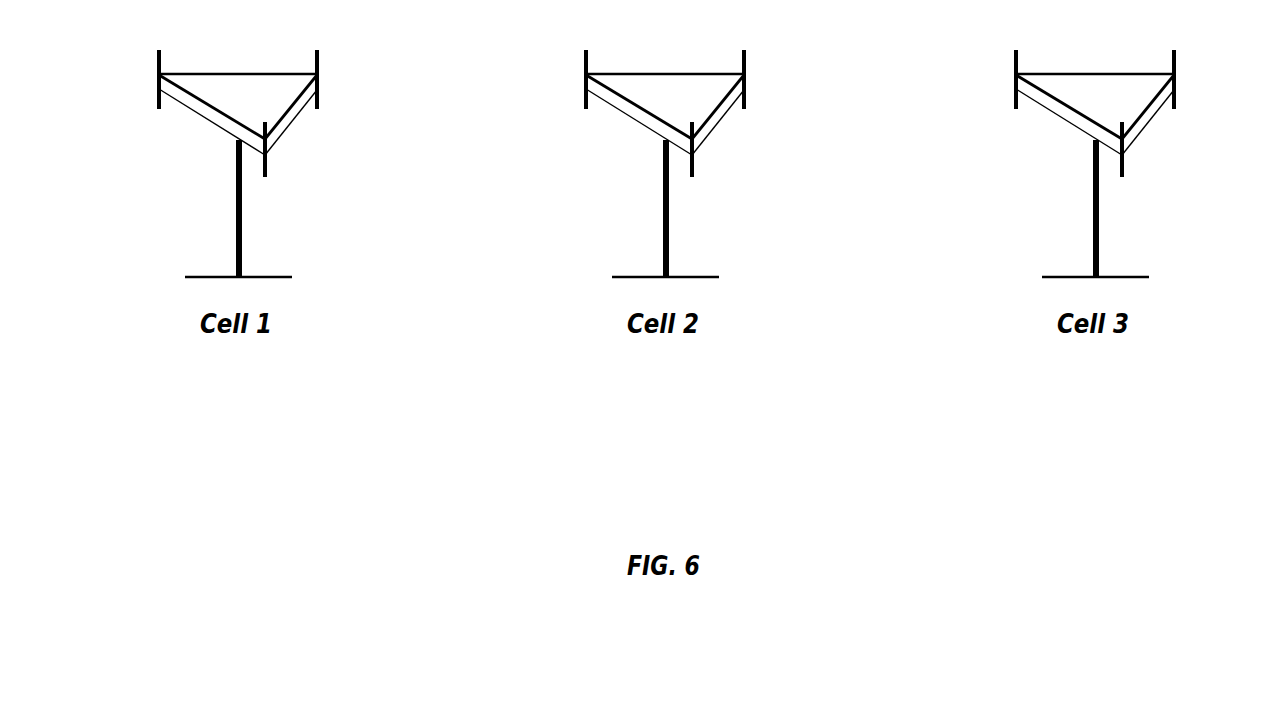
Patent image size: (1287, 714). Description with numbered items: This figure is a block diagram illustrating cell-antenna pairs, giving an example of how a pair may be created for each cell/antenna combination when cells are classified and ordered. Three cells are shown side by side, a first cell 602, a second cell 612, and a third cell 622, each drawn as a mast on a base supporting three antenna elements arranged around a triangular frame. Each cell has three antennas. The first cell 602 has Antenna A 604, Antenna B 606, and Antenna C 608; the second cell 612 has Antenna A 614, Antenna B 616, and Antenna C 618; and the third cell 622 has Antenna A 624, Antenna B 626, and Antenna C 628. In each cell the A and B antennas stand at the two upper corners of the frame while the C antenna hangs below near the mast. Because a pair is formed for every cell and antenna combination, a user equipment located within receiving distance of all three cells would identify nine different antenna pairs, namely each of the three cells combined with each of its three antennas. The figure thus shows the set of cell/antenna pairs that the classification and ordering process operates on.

The Cell 1 602 is at (222, 242).
The Antenna A 604 is at (161, 53).
The Antenna B 606 is at (319, 53).
The Antenna C 608 is at (265, 182).
The Cell 2 612 is at (665, 175).
The Antenna A 614 is at (551, 65).
The Antenna B 616 is at (798, 65).
The Antenna C 618 is at (734, 174).
The Cell 3 622 is at (1095, 175).
The Antenna A 624 is at (981, 65).
The Antenna B 626 is at (1228, 65).
The Antenna C 628 is at (1164, 174).